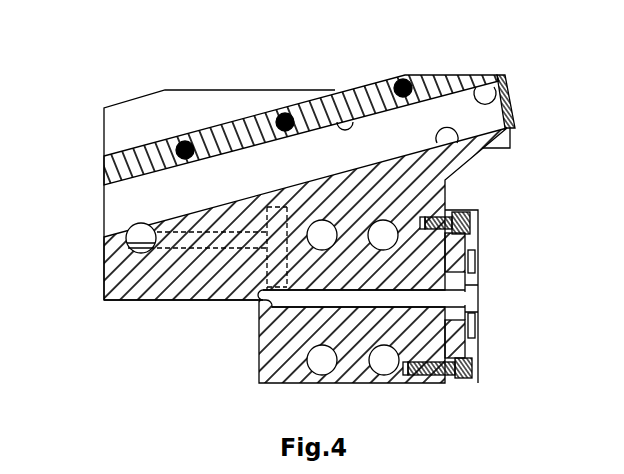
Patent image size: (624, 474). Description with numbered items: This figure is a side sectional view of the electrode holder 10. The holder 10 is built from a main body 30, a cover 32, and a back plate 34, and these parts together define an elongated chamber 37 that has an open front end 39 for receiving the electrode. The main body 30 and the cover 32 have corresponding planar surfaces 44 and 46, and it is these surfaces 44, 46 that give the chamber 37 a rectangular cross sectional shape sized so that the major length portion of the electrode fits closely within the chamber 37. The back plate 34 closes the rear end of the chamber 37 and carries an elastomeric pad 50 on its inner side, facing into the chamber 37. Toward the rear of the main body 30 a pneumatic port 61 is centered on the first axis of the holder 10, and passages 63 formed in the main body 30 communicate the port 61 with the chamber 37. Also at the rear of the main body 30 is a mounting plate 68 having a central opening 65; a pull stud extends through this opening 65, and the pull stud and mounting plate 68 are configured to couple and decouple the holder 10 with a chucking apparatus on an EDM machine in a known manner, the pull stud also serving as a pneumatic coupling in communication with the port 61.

The holder 10 is at (110, 65).
The main body 30 is at (163, 108).
The cover 32 is at (377, 97).
The back plate 34 is at (505, 108).
The elongated chamber 37 is at (343, 158).
The open front end 39 is at (106, 213).
The planar surface 44 is at (217, 185).
The planar surface 46 is at (332, 108).
The elastomeric pad 50 is at (480, 74).
The pneumatic port 61 is at (442, 298).
The passages 63 is at (303, 304).
The central opening 65 is at (499, 292).
The mounting plate 68 is at (480, 233).